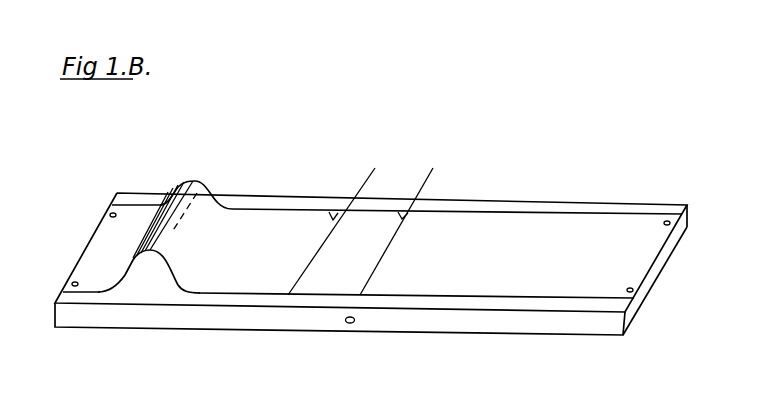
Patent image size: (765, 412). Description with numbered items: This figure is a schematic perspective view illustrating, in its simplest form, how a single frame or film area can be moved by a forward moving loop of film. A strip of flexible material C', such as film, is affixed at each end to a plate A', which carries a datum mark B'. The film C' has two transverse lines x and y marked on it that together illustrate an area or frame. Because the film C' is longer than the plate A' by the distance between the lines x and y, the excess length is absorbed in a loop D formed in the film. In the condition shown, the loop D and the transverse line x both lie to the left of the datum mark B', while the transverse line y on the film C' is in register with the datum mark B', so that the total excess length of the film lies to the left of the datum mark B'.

The plate A' is at (371, 283).
The datum mark B' is at (370, 337).
The strip of flexible material C' is at (567, 294).
The loop D is at (203, 201).
The transverse line x is at (333, 222).
The transverse line y is at (400, 224).